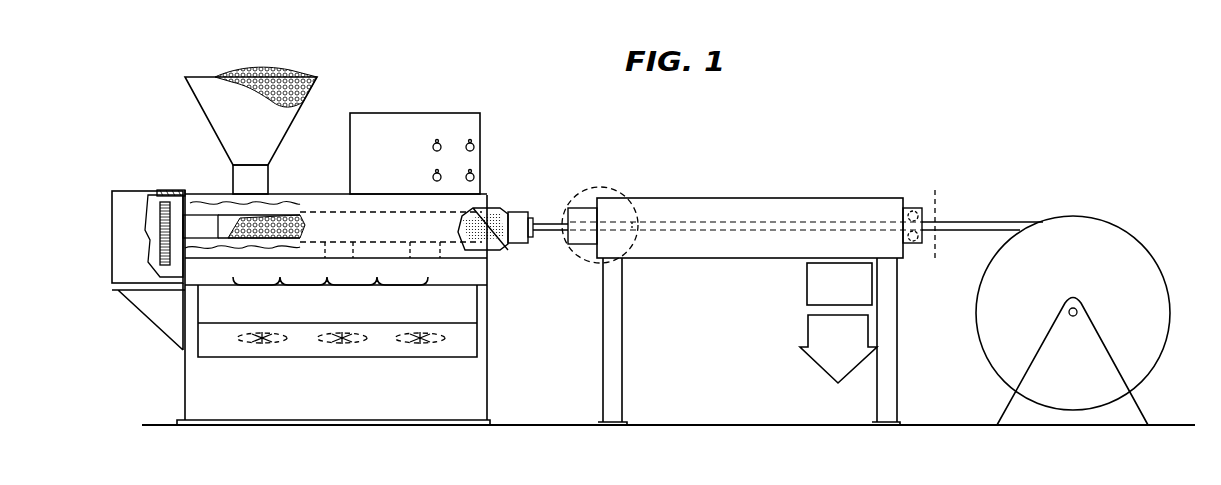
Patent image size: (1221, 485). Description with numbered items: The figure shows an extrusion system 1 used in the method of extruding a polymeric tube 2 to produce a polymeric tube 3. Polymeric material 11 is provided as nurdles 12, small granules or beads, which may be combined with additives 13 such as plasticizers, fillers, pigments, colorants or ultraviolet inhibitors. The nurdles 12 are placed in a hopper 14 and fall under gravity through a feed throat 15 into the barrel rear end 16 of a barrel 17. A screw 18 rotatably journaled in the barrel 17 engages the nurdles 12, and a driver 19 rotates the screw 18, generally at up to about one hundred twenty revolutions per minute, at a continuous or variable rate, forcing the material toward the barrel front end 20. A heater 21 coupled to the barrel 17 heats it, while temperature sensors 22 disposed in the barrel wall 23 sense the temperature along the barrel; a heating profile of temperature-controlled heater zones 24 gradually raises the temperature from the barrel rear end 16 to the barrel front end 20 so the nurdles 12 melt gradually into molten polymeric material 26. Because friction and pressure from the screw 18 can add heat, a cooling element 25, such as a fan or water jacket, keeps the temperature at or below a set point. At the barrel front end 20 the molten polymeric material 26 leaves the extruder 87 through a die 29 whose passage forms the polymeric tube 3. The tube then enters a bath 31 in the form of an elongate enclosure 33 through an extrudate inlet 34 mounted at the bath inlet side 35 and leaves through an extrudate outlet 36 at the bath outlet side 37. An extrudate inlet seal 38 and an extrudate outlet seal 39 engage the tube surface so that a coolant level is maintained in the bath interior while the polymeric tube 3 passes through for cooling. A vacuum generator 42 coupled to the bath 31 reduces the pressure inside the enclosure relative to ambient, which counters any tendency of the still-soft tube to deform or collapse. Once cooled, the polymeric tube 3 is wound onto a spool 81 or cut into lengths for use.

The polymeric material 11 is at (265, 62).
The nurdles 12 is at (265, 62).
The additives 13 is at (265, 72).
The hopper 14 is at (229, 91).
The feed throat 15 is at (260, 183).
The barrel rear end 16 is at (212, 205).
The barrel 17 is at (236, 244).
The screw 18 is at (292, 205).
The driver 19 is at (163, 212).
The barrel front end 20 is at (508, 210).
The heater 21 is at (387, 320).
The temperature sensors 22 is at (309, 258).
The barrel wall 23 is at (252, 242).
The heater zones 24 is at (331, 308).
The cooling element 25 is at (327, 343).
The molten polymeric material 26 is at (490, 207).
The die 29 is at (518, 243).
The polymeric tube 3 is at (562, 216).
The bath 31 is at (746, 281).
The elongate enclosure 33 is at (748, 194).
The extrudate inlet 34 is at (573, 203).
The bath inlet side 35 is at (595, 250).
The extrudate outlet 36 is at (914, 198).
The bath outlet side 37 is at (903, 258).
The extrudate inlet seal 38 is at (583, 233).
The extrudate outlet seal 39 is at (903, 220).
The vacuum generator 42 is at (851, 294).
The spool 81 is at (1135, 263).
The extruder 87 is at (305, 209).
The method of extruding a polymeric tube 2 is at (961, 260).
The extrusion system 1 is at (810, 100).